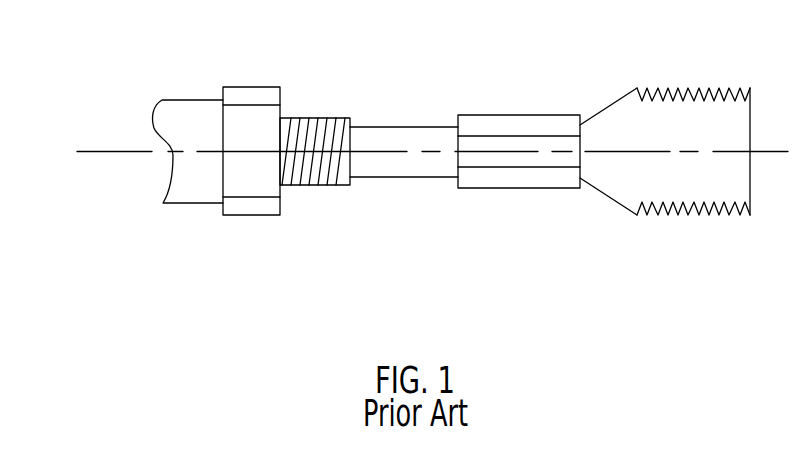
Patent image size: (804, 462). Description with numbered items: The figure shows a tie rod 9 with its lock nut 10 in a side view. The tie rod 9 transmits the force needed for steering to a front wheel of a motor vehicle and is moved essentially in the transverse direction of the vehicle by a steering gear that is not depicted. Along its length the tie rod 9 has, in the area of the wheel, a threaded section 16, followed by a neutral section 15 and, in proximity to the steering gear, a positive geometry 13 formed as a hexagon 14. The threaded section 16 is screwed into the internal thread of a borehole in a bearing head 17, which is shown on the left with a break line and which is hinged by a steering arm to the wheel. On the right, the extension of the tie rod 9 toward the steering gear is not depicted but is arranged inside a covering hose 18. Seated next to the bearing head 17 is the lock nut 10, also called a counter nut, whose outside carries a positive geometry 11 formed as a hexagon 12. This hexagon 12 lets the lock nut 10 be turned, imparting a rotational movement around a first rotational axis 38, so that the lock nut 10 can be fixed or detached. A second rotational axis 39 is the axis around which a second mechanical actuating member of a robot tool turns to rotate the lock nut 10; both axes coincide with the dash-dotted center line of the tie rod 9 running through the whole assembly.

The tie rod 9 is at (430, 150).
The lock nut 10 is at (251, 159).
The positive geometry 11 is at (251, 190).
The hexagon 12 is at (255, 168).
The positive geometry 13 is at (519, 179).
The hexagon 14 is at (508, 153).
The neutral section 15 is at (398, 130).
The threaded section 16 is at (320, 122).
The bearing head 17 is at (175, 107).
The covering hose 18 is at (690, 180).
The first rotational axis 38 is at (415, 124).
The second rotational axis 39 is at (102, 148).